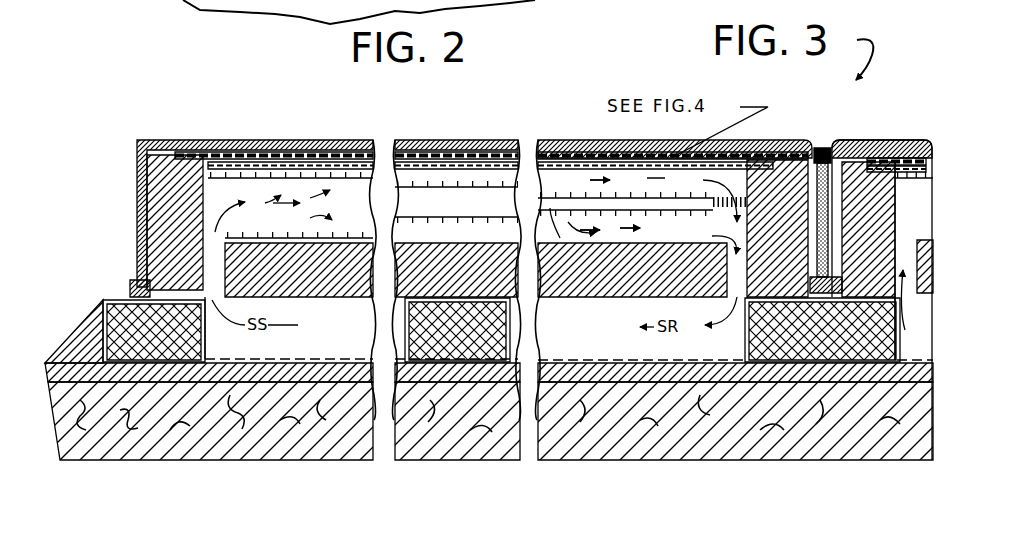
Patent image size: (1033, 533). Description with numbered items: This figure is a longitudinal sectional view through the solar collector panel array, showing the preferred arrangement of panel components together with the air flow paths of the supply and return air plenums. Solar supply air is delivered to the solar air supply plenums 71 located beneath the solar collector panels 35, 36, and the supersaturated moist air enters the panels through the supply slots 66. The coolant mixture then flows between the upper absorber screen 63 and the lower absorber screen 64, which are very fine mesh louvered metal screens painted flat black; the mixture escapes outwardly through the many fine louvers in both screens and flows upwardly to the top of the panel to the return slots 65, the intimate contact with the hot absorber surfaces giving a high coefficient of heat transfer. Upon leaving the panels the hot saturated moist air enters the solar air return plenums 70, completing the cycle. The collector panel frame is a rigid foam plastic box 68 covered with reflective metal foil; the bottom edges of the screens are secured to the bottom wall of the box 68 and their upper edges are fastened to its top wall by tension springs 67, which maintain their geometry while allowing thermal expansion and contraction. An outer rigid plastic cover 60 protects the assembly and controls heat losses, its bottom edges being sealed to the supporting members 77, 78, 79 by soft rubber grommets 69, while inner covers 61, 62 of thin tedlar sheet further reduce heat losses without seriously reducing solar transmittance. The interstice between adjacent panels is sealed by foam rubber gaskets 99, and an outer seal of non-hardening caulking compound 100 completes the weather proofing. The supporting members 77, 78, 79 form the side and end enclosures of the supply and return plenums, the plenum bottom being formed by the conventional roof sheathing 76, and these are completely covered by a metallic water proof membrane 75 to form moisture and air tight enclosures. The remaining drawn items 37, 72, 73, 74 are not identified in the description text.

The solar collector panel 35 is at (213, 140).
The solar collector panel 36 is at (887, 140).
The substrate 37 is at (537, 390).
The outer rigid plastic cover 60 is at (339, 140).
The inner cover 61 is at (380, 157).
The inner cover 62 is at (522, 162).
The upper absorber screen 63 is at (368, 184).
The lower absorber screen 64 is at (262, 234).
The return slots 65 is at (741, 298).
The supply slots 66 is at (214, 262).
The tension springs 67 is at (744, 188).
The rigid foam plastic box 68 is at (247, 200).
The soft rubber grommets 69 is at (127, 284).
The solar air return plenum 70 is at (626, 346).
The solar air supply plenum 71 is at (313, 349).
The air flow arrow 72 is at (698, 179).
The air flow arrow 73 is at (628, 240).
The air flow arrow 74 is at (318, 212).
The metallic water proof membrane 75 is at (580, 357).
The roof sheathing 76 is at (563, 363).
The supporting member 77 is at (212, 342).
The supporting member 78 is at (407, 345).
The supporting member 79 is at (750, 344).
The foam rubber gaskets 99 is at (848, 146).
The non-hardening caulking compound 100 is at (818, 140).